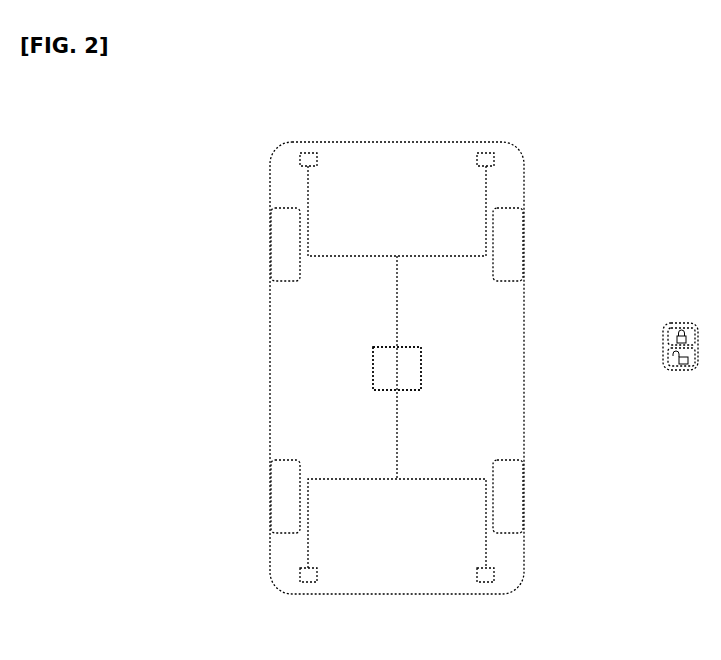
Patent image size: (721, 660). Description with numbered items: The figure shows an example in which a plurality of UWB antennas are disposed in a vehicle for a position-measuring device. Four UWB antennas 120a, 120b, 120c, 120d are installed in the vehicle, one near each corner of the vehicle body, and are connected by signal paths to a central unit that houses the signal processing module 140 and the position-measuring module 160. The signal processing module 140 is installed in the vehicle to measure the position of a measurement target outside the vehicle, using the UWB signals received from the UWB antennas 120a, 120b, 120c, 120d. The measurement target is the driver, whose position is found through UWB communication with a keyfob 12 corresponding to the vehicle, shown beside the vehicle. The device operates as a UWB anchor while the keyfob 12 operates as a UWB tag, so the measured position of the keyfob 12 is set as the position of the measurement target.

The UWB antenna 120a is at (308, 151).
The UWB antenna 120b is at (486, 151).
The UWB antenna 120c is at (304, 583).
The UWB antenna 120d is at (482, 583).
The signal processing module 140 is at (372, 368).
The position-measuring module 160 is at (397, 368).
The keyfob 12 is at (680, 323).